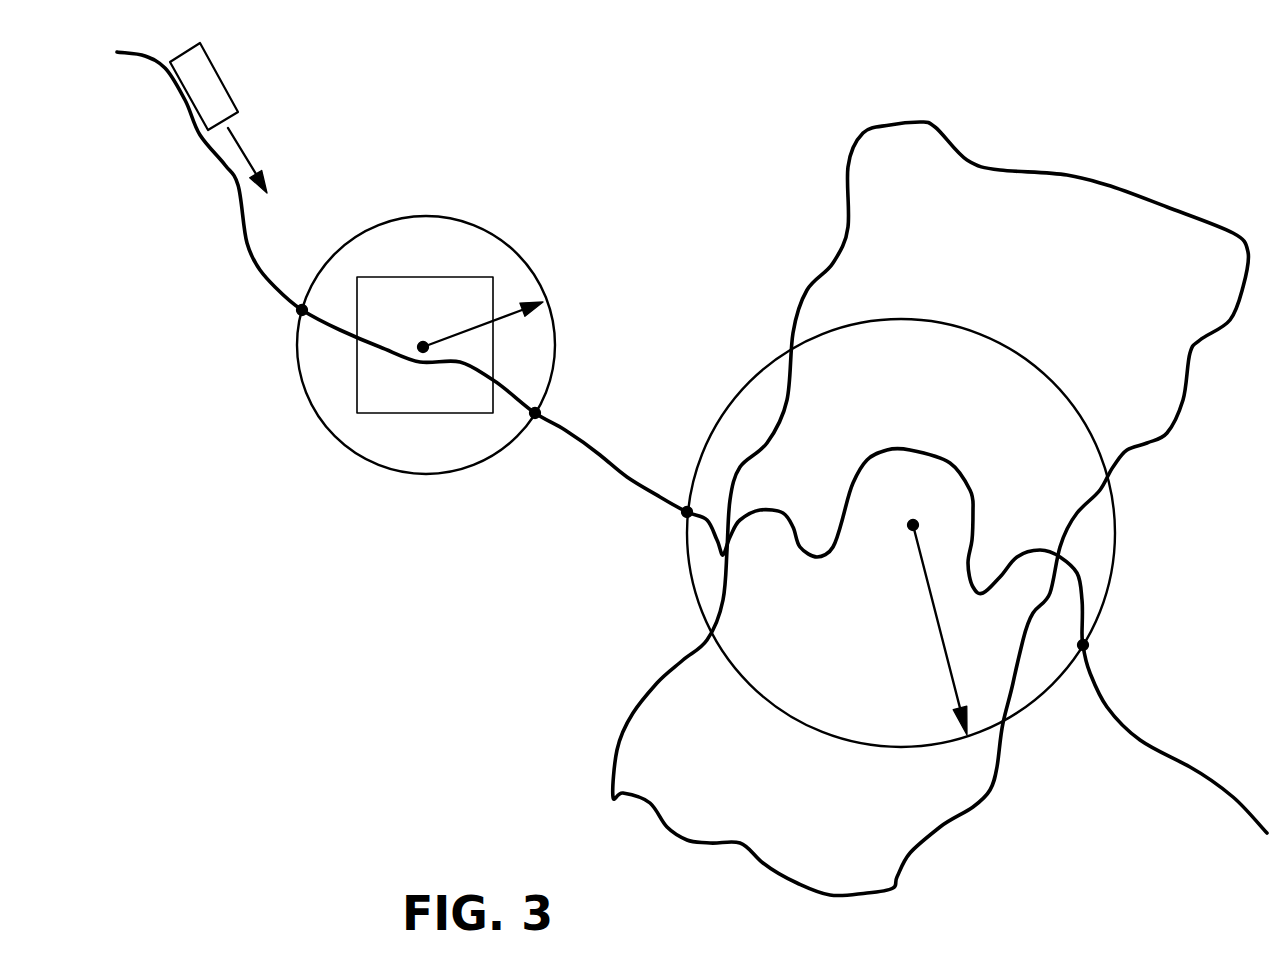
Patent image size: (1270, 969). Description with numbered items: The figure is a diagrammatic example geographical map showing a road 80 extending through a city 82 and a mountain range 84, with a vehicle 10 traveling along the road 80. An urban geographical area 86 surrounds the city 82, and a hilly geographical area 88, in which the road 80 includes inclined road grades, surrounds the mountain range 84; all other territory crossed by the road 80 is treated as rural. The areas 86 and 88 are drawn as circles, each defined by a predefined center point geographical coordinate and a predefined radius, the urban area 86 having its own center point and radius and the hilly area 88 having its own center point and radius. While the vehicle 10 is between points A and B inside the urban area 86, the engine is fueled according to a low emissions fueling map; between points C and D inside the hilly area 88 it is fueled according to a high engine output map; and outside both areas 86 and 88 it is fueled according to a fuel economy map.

The vehicle 10 is at (223, 78).
The road 80 is at (247, 247).
The city 82 is at (395, 413).
The mountain range 84 is at (1080, 172).
The urban geographical area 86 is at (433, 217).
The hilly geographical area 88 is at (1117, 557).